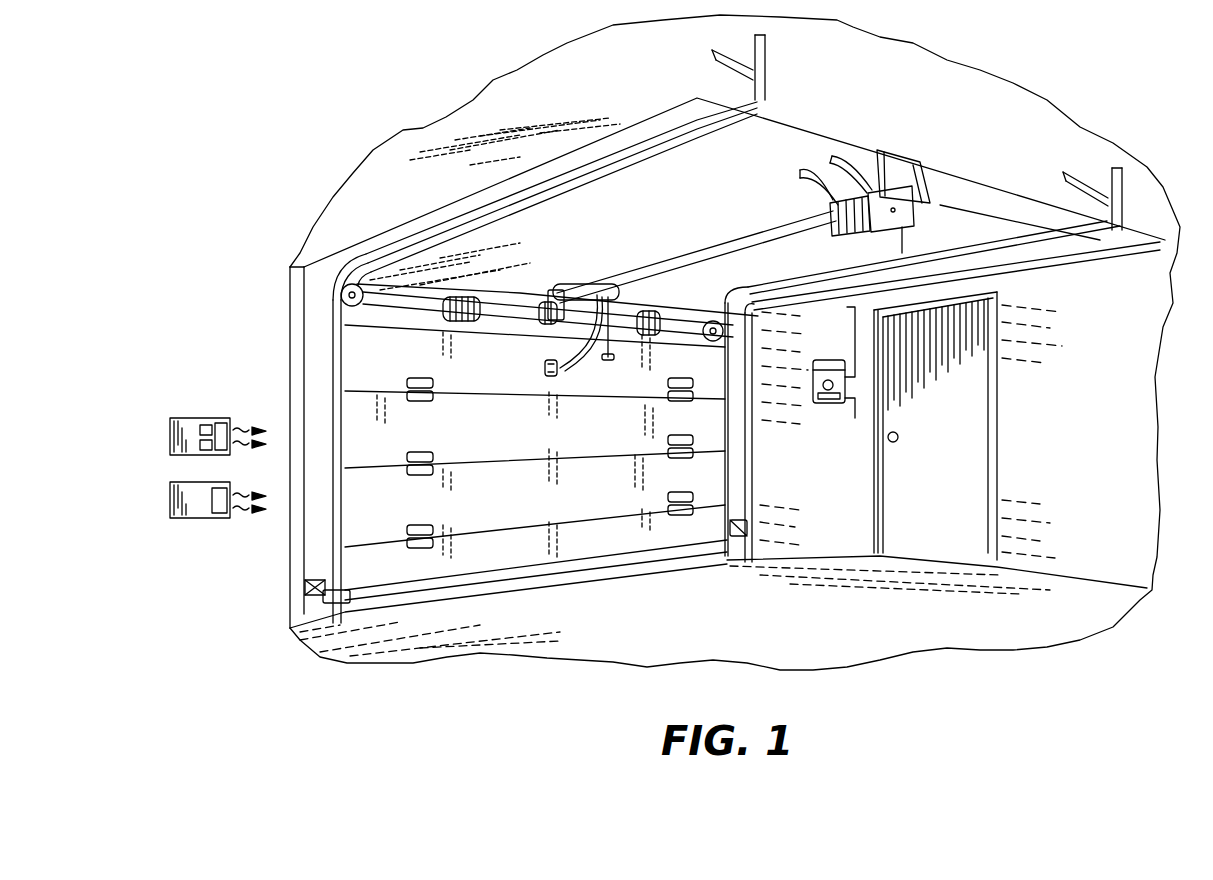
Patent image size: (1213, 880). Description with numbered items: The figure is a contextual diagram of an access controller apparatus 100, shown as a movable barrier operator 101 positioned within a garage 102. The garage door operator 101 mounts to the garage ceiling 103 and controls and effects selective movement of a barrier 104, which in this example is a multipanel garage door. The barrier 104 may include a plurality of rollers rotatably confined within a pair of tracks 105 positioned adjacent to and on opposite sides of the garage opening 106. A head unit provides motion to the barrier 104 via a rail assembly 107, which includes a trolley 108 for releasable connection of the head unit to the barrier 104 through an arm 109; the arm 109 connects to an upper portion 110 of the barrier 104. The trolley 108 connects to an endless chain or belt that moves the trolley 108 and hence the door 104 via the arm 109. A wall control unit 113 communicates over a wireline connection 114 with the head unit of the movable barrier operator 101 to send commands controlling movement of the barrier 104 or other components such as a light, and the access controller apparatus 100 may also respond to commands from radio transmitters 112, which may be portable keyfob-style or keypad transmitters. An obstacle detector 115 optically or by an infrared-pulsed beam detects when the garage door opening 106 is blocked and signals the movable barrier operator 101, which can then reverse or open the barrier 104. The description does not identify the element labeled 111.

The access controller apparatus 100 is at (753, 226).
The movable barrier operator 101 is at (840, 237).
The garage 102 is at (290, 297).
The garage ceiling 103 is at (997, 110).
The barrier 104 is at (580, 546).
The tracks 105 is at (730, 482).
The garage opening 106 is at (697, 540).
The rail assembly 107 is at (677, 260).
The trolley 108 is at (620, 291).
The arm 109 is at (583, 357).
The upper portion 110 is at (502, 378).
The antenna wire 111 is at (905, 240).
The radio transmitters 112 is at (202, 513).
The wall control unit 113 is at (844, 401).
The wireline connection 114 is at (846, 312).
The obstacle detector 115 is at (343, 598).